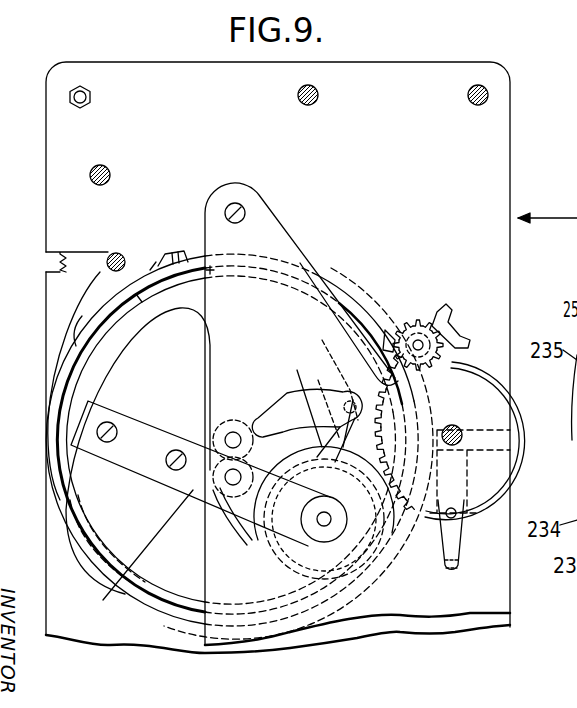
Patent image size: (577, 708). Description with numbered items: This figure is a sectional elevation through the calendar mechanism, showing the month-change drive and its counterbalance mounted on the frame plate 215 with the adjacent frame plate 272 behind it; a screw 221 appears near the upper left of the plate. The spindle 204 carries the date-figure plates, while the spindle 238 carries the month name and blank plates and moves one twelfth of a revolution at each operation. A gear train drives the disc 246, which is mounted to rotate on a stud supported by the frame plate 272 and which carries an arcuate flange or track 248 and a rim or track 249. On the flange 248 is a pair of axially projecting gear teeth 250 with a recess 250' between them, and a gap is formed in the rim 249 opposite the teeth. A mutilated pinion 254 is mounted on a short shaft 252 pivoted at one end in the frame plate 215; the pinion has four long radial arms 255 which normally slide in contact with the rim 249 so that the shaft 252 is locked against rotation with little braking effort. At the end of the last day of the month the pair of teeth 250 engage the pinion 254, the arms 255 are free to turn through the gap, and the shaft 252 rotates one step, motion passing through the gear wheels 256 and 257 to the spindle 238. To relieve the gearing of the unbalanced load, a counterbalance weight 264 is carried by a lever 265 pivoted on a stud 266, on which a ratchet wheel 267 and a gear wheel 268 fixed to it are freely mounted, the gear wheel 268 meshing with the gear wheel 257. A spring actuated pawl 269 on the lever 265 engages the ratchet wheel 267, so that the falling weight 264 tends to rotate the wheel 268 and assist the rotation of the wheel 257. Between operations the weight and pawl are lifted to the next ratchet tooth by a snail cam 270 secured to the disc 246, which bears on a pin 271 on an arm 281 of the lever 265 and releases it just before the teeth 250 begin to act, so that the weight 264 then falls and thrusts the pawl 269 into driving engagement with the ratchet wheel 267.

The frame plate 215 is at (472, 133).
The screw 221 is at (108, 256).
The spindle 204 is at (225, 434).
The spindle 238 is at (452, 430).
The disc 246 is at (140, 577).
The arcuate flange or track 248 is at (88, 318).
The rim or track 249 is at (325, 290).
The gear teeth 250 is at (156, 222).
The recess 250' is at (146, 231).
The short shaft 252 is at (408, 318).
The mutilated pinion 254 is at (443, 327).
The teeth or radial arms 255 is at (430, 310).
The gear wheel 256 is at (437, 320).
The gear wheel 257 is at (467, 383).
The counterbalance weight 264 is at (198, 451).
The lever 265 is at (233, 543).
The stud 266 is at (324, 519).
The ratchet wheel 267 is at (277, 553).
The gear wheel 268 is at (397, 527).
The spring actuated pawl 269 is at (230, 518).
The snail cam 270 is at (277, 413).
The pin 271 is at (334, 368).
The frame plate 272 is at (250, 203).
The arm 281 is at (340, 433).